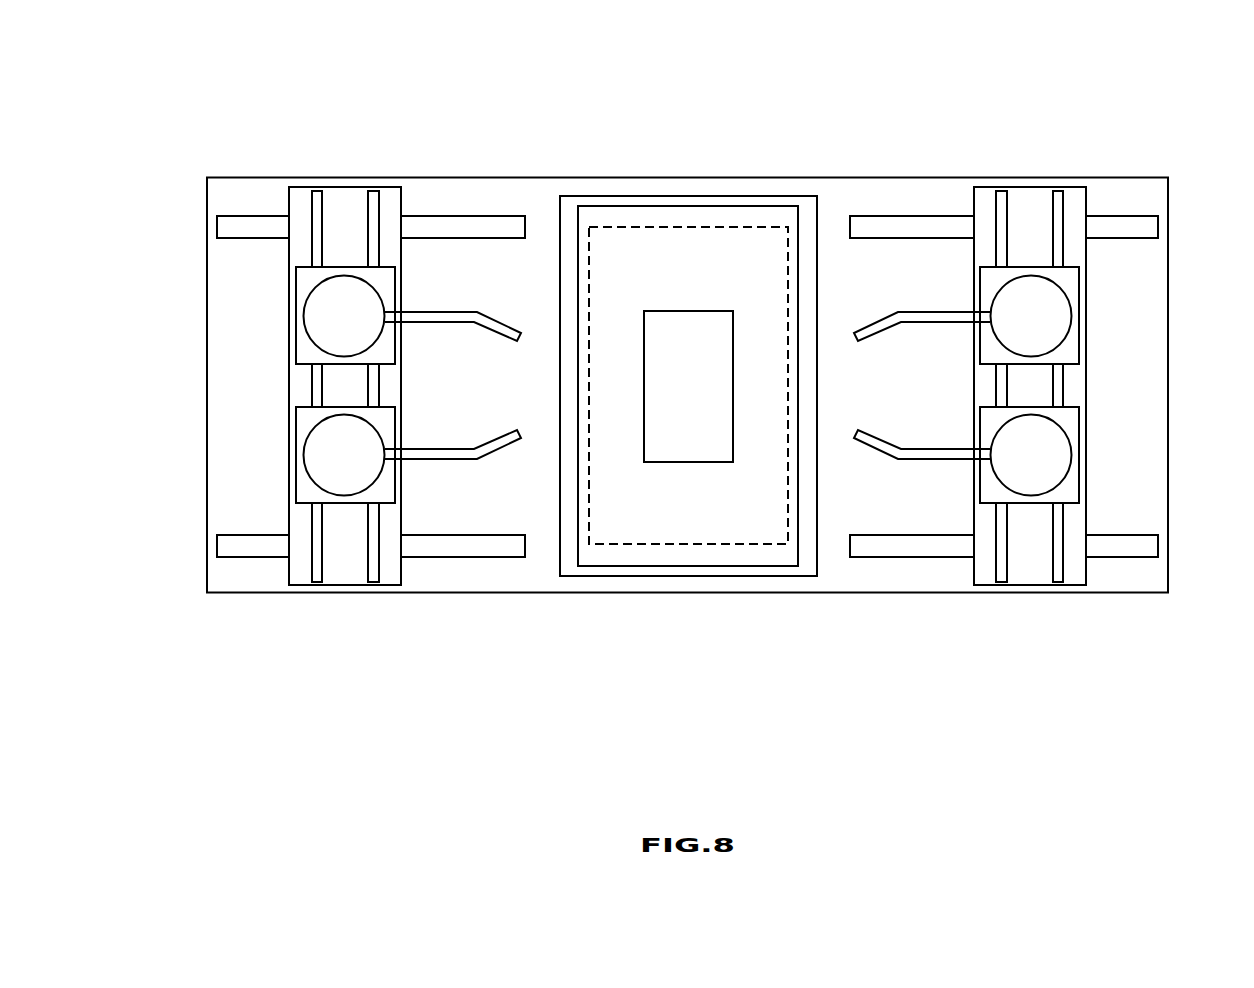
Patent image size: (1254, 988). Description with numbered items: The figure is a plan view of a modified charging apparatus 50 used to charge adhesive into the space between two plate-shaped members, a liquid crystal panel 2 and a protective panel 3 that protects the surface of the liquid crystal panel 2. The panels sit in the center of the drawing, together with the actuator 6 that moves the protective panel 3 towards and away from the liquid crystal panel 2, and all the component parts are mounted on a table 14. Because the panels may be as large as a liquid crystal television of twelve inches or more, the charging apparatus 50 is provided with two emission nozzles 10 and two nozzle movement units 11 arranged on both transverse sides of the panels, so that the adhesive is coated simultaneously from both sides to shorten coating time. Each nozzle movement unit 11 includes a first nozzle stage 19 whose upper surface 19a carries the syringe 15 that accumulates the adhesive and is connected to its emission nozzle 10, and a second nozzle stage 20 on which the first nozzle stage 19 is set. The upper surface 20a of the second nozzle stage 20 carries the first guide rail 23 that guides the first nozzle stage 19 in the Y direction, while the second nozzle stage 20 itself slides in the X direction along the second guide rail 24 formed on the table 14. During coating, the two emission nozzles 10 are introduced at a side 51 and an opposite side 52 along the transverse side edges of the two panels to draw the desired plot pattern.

The charging apparatus 50 is at (688, 39).
The nozzle movement unit 11 is at (245, 170).
The second nozzle stage 20 is at (346, 580).
The upper surface 20a is at (300, 572).
The first guide rail 23 is at (317, 585).
The first nozzle stage 19 is at (293, 299).
The upper surface 19a is at (304, 285).
The syringe 15 is at (344, 316).
The emission nozzle 10 is at (459, 317).
The second guide rail 24 is at (423, 213).
The protective panel 3 is at (756, 196).
The liquid crystal panel 2 is at (710, 227).
The table 14 is at (687, 593).
The actuator 6 is at (657, 310).
The side 51 is at (570, 393).
The opposite side 52 is at (805, 393).